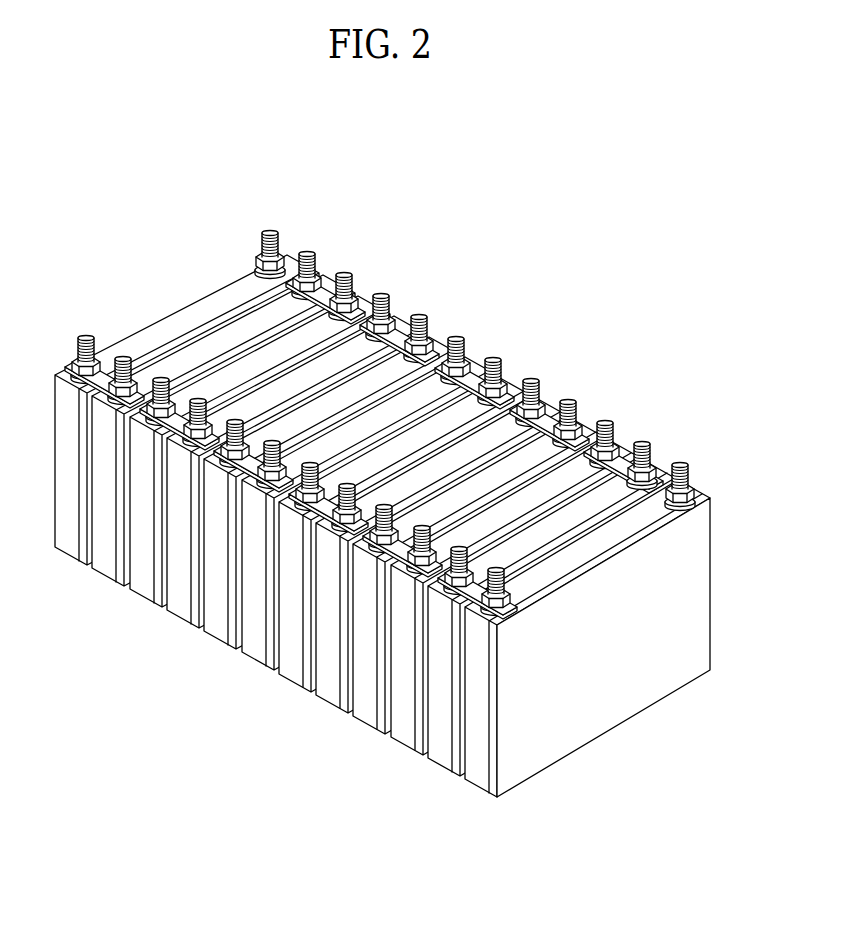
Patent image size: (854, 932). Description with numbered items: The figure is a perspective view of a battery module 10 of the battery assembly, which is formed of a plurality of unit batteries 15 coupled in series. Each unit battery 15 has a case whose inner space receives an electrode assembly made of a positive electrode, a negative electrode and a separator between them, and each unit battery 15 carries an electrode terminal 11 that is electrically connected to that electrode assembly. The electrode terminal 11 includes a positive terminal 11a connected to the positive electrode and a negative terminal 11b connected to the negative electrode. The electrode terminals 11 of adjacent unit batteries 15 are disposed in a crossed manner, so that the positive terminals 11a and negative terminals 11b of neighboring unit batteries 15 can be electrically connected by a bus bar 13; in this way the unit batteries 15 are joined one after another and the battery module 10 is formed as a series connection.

The battery module 10 is at (393, 151).
The electrode terminal 11 is at (657, 353).
The positive terminal 11a is at (680, 463).
The negative terminal 11b is at (645, 443).
The bus bar 13 is at (548, 417).
The unit battery 15 is at (612, 713).